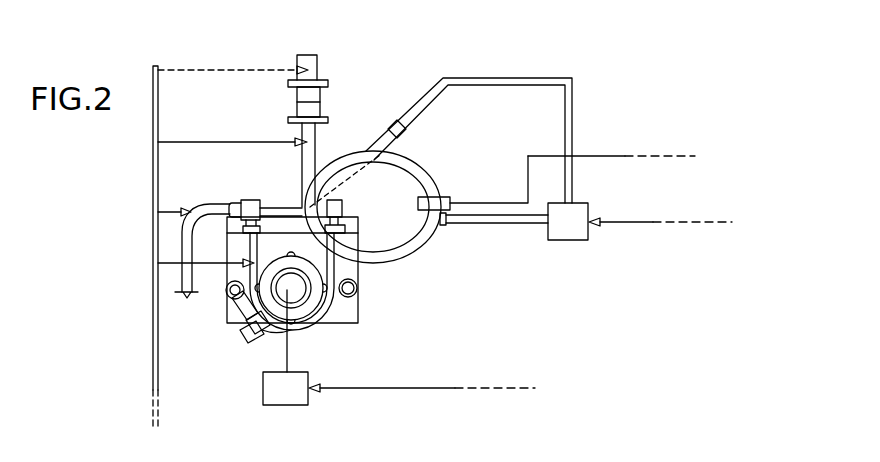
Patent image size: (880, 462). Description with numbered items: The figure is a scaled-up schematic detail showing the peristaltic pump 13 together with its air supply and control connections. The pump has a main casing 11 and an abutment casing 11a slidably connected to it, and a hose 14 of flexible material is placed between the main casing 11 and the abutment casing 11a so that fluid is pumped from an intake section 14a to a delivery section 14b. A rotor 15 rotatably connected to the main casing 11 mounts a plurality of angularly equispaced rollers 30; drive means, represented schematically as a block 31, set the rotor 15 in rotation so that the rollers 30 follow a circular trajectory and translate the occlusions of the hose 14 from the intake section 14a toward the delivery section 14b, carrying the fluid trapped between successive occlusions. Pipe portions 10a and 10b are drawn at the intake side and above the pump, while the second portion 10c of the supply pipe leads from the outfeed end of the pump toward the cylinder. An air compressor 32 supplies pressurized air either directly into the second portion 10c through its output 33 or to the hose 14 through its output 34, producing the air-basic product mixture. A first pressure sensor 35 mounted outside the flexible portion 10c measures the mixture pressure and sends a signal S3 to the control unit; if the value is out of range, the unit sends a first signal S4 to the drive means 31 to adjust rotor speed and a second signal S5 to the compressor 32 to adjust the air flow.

The inlet pipe 10a is at (185, 243).
The second pipe 10b is at (318, 58).
The second portion of the supply pipe 10c is at (420, 160).
The main casing 11 is at (363, 280).
The abutment casing 11a is at (271, 338).
The peristaltic pump 13 is at (360, 327).
The hose 14 is at (228, 310).
The intake section 14a is at (230, 196).
The delivery section 14b is at (350, 225).
The rotor 15 is at (308, 308).
The rollers 30 is at (290, 253).
The drive means 31 is at (276, 400).
The air compressor 32 is at (558, 233).
The output of the compressor 33 is at (510, 226).
The output of the compressor 34 is at (377, 143).
The first pressure sensor 35 is at (452, 195).
The signal S3 is at (588, 155).
The first signal S4 is at (408, 389).
The second signal S5 is at (630, 220).